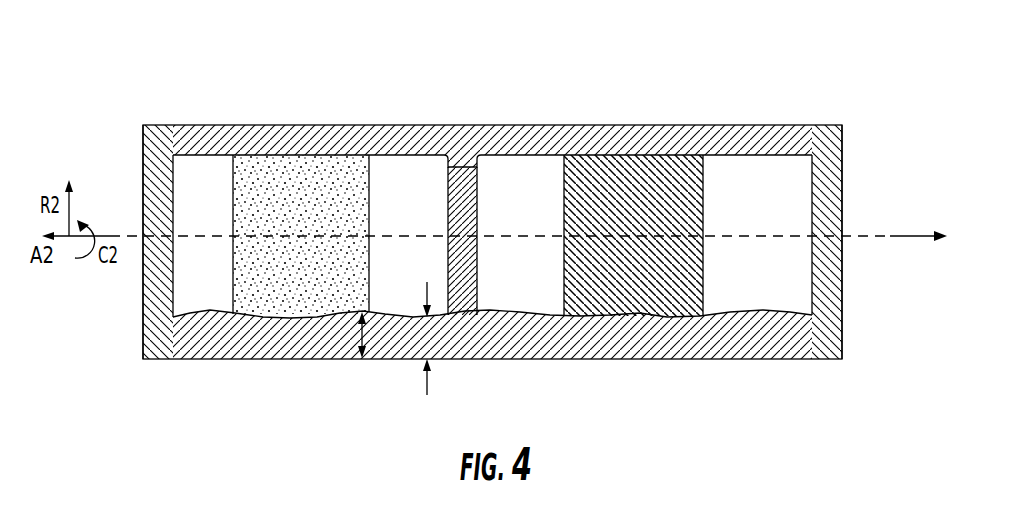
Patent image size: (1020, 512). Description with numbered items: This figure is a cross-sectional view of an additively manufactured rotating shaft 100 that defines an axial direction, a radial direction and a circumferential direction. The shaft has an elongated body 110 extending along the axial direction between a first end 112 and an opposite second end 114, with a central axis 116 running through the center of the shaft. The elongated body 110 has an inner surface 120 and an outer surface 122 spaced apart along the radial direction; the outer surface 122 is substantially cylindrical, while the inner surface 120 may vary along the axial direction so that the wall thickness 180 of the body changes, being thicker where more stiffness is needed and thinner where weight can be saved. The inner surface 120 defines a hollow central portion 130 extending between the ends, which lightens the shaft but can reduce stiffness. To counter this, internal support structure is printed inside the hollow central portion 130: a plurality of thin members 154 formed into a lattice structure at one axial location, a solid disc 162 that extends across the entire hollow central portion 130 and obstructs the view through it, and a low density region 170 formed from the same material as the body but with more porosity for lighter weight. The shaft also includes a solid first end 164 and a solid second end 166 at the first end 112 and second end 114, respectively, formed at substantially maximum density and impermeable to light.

The rotating shaft 100 is at (162, 70).
The elongated body 110 is at (517, 136).
The first end 112 is at (143, 377).
The second end 114 is at (845, 362).
The central axis 116 is at (904, 235).
The inner surface 120 is at (198, 158).
The outer surface 122 is at (280, 360).
The hollow central portion 130 is at (543, 272).
The thin members 154 is at (681, 178).
The solid disc 162 is at (466, 263).
The solid first end 164 is at (143, 323).
The solid second end 166 is at (837, 291).
The low density region 170 is at (333, 196).
The wall thickness 180 is at (364, 335).